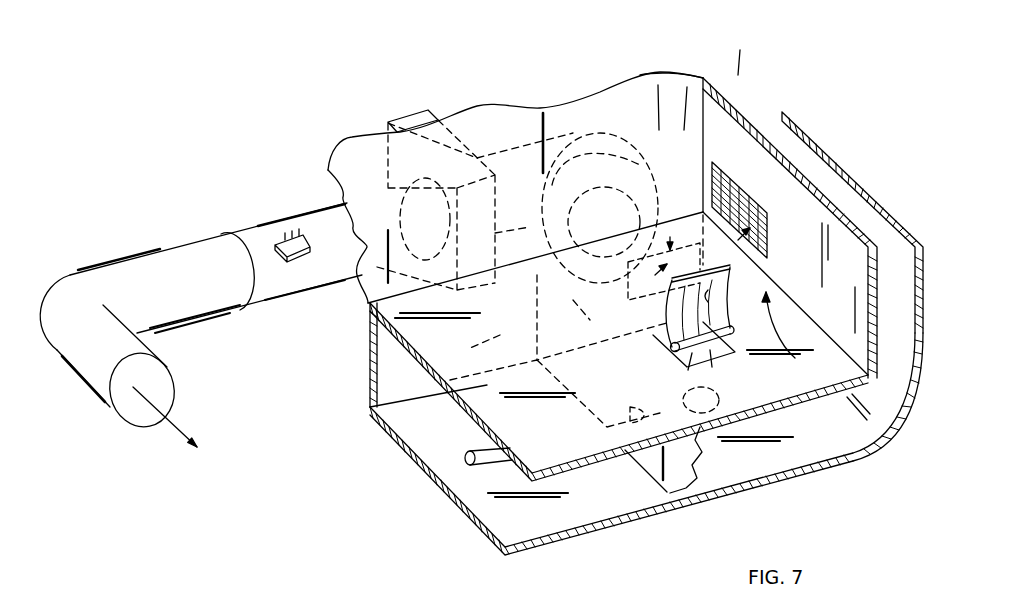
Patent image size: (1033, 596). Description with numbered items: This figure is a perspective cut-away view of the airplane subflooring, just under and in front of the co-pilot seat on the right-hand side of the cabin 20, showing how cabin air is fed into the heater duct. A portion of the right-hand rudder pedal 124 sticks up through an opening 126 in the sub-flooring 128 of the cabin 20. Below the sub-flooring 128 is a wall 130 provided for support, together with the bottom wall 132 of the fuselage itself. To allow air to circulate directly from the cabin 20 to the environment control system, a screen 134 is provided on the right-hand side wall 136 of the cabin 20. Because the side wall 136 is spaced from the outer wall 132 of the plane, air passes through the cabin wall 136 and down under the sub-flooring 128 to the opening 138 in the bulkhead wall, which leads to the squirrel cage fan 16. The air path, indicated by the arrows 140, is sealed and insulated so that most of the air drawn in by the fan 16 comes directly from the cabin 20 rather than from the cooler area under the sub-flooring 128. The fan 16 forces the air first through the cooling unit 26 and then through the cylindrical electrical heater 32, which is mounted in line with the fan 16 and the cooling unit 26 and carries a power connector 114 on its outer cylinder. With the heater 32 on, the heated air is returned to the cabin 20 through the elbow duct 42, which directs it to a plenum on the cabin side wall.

The squirrel cage fan 16 is at (506, 73).
The cabin 20 is at (718, 130).
The cooling unit 26 is at (413, 122).
The cylindrical electrical heater 32 is at (321, 217).
The elbow duct 42 is at (92, 292).
The power connector 114 is at (275, 240).
The right-hand rudder pedal 124 is at (757, 366).
The opening 126 is at (727, 360).
The sub-flooring 128 is at (492, 389).
The wall 130 is at (655, 457).
The bottom wall 132 is at (482, 481).
The screen 134 is at (763, 207).
The side wall 136 is at (840, 238).
The opening 138 is at (690, 77).
The arrows 140 is at (817, 363).